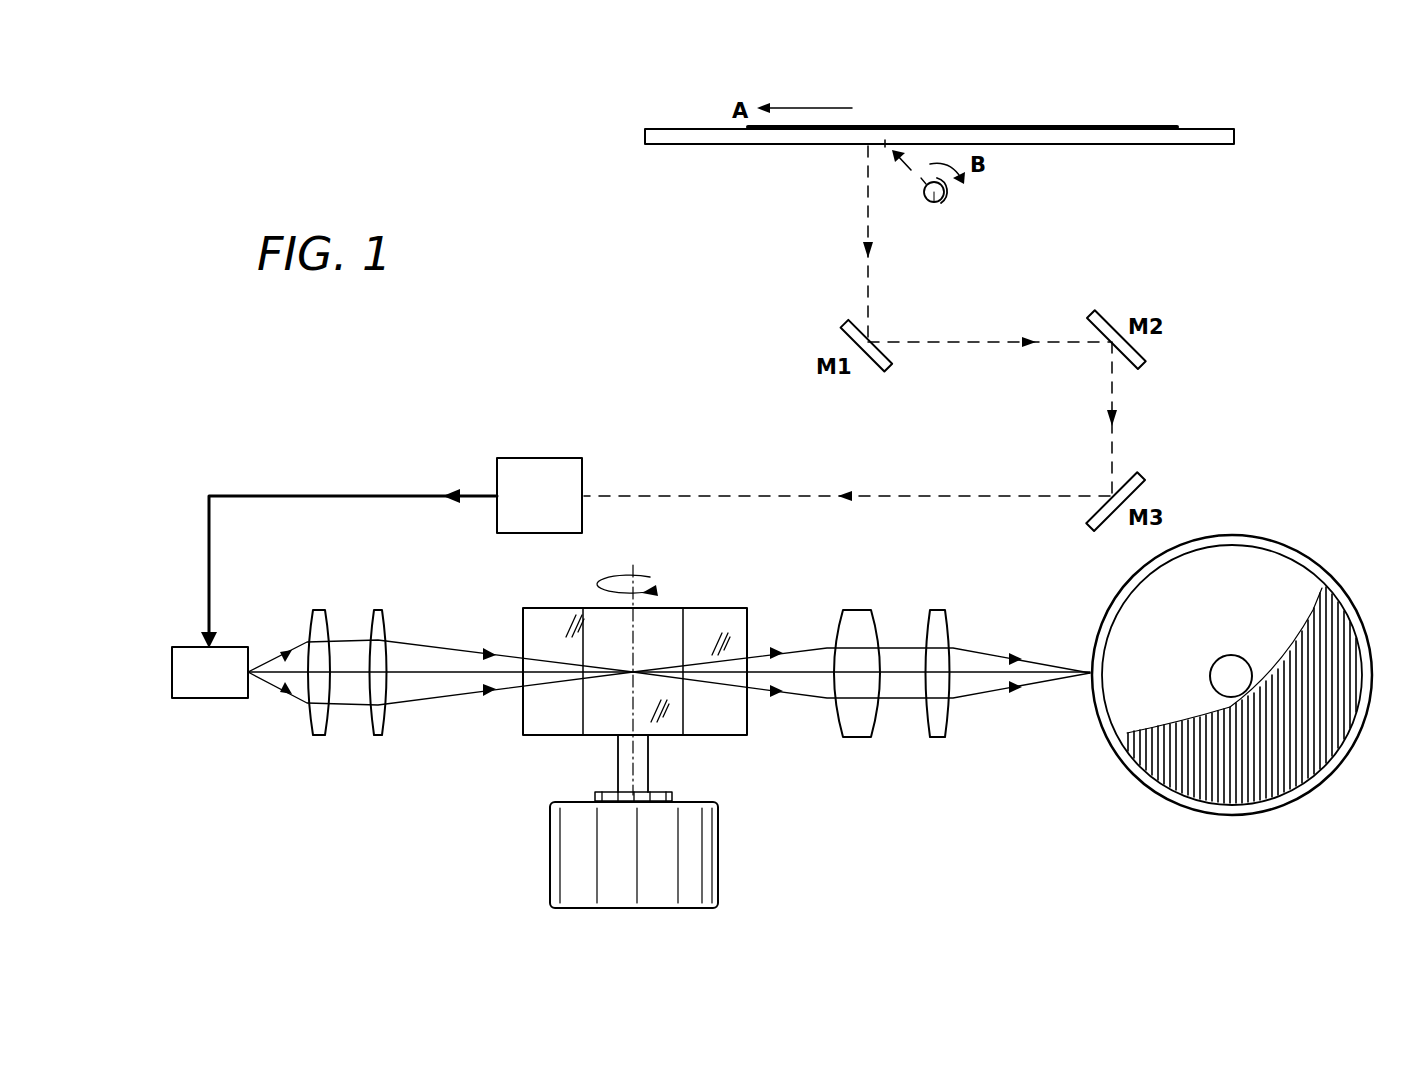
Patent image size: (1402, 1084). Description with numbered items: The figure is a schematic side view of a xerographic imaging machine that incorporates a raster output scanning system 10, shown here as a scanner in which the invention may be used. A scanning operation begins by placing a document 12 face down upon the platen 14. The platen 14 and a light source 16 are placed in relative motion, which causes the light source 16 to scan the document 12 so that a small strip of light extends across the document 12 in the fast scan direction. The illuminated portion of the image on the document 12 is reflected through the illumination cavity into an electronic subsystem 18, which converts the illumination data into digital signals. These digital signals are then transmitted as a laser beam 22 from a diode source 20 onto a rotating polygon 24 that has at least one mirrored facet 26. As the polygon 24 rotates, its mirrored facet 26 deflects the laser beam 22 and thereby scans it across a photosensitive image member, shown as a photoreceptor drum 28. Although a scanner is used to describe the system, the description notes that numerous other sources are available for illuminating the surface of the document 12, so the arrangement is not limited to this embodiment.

The raster output scanning system 10 is at (1288, 178).
The document 12 is at (1138, 128).
The platen 14 is at (1092, 144).
The light source 16 is at (944, 204).
The electronic subsystem 18 is at (512, 458).
The diode source 20 is at (198, 699).
The laser beam 22 is at (306, 655).
The rotating polygon 24 is at (670, 610).
The mirrored facet 26 is at (562, 736).
The photoreceptor drum 28 is at (1270, 540).